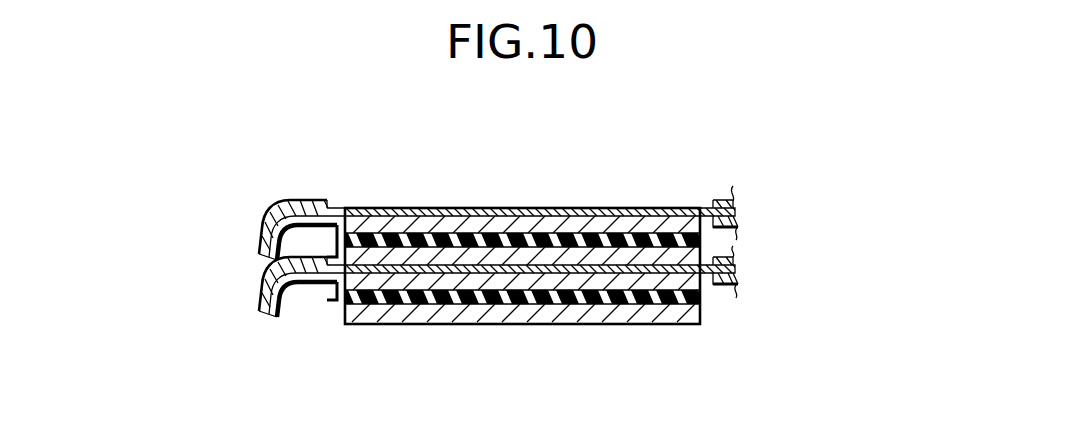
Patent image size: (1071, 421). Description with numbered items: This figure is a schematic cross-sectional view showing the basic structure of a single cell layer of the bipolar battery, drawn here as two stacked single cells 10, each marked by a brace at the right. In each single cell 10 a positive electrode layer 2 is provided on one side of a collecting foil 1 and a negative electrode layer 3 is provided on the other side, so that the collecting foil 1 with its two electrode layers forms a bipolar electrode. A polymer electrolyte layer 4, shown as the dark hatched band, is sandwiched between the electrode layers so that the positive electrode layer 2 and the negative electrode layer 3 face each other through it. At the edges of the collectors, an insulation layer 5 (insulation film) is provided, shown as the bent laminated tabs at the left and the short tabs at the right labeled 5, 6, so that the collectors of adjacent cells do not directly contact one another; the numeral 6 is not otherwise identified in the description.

The collecting foil 1 is at (633, 207).
The positive electrode layer 2 is at (401, 253).
The negative electrode layer 3 is at (556, 228).
The polymer electrolyte layer 4 is at (476, 243).
The insulation layer 5 is at (448, 298).
The negative electrode lead 6 is at (268, 293).
The single cell 10 is at (571, 267).